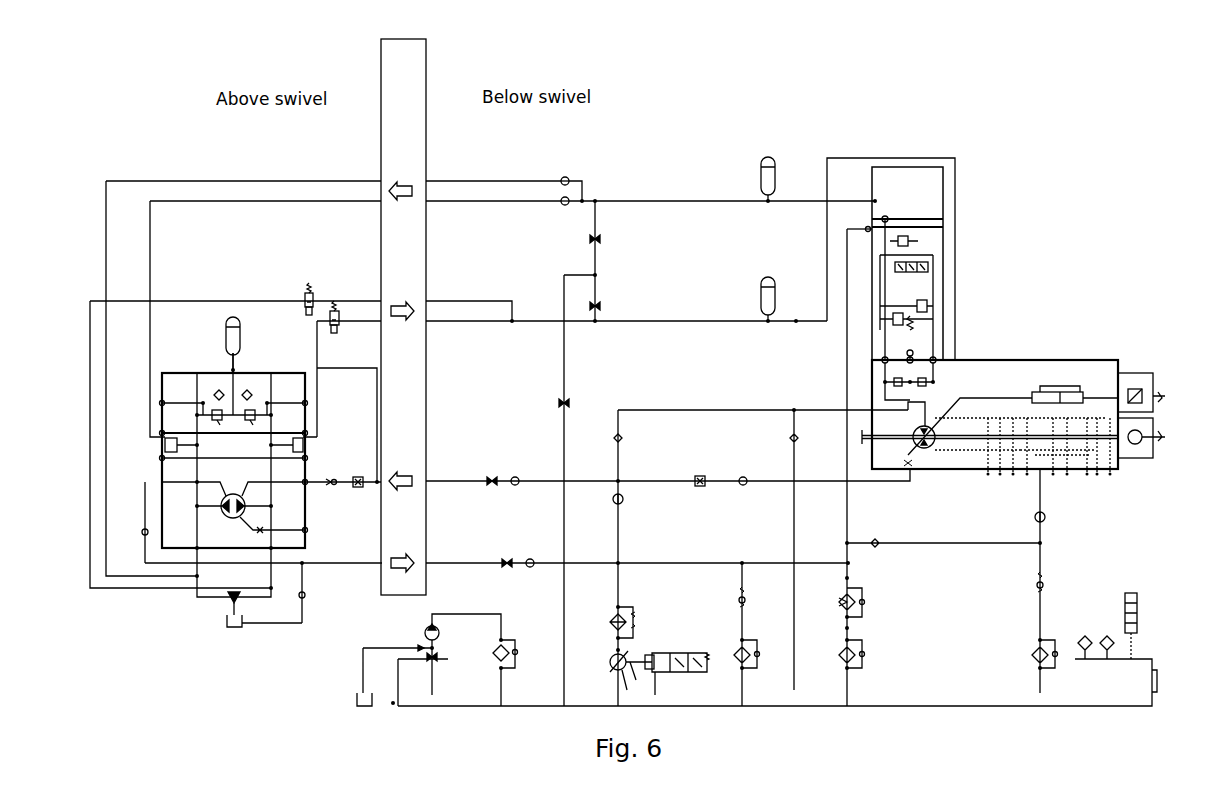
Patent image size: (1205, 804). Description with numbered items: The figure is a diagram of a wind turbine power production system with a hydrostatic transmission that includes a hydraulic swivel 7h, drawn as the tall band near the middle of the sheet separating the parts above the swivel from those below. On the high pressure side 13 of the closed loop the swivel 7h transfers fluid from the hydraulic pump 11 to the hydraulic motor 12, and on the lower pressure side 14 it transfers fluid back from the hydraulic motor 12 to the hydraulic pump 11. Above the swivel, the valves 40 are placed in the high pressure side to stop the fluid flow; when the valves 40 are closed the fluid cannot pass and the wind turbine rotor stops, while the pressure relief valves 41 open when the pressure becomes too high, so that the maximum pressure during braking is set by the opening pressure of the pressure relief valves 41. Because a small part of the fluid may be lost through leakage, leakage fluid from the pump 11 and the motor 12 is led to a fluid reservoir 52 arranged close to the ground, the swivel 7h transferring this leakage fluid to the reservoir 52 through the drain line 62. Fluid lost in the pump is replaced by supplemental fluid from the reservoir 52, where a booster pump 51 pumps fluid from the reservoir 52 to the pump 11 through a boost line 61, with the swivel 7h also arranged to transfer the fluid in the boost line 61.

The hydraulic swivel 7h is at (403, 317).
The hydraulic pump 11 is at (177, 368).
The hydraulic motor 12 is at (1023, 360).
The high pressure side 13 is at (458, 297).
The lower pressure side 14 is at (491, 177).
The valves 40 is at (338, 298).
The pressure relief valves 41 is at (255, 398).
The booster pump 51 is at (651, 673).
The fluid reservoir 52 is at (931, 703).
The boost line 61 is at (668, 469).
The drain line 62 is at (638, 550).